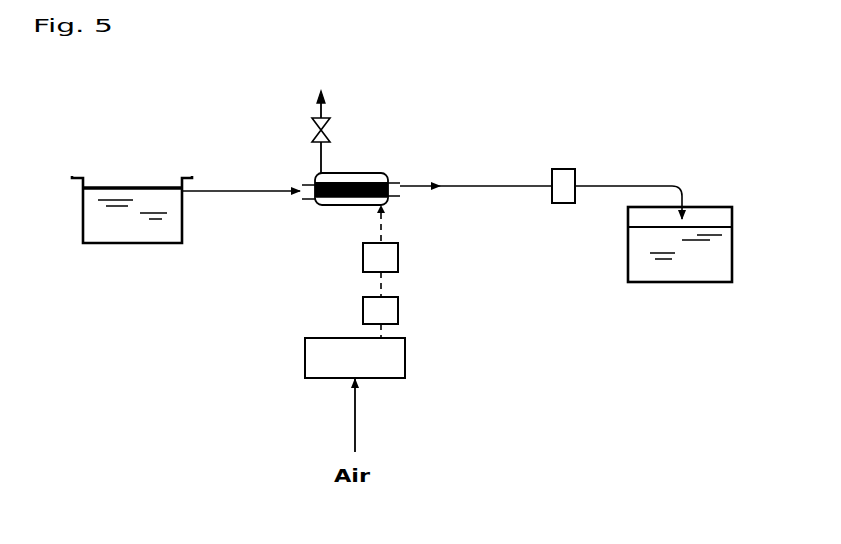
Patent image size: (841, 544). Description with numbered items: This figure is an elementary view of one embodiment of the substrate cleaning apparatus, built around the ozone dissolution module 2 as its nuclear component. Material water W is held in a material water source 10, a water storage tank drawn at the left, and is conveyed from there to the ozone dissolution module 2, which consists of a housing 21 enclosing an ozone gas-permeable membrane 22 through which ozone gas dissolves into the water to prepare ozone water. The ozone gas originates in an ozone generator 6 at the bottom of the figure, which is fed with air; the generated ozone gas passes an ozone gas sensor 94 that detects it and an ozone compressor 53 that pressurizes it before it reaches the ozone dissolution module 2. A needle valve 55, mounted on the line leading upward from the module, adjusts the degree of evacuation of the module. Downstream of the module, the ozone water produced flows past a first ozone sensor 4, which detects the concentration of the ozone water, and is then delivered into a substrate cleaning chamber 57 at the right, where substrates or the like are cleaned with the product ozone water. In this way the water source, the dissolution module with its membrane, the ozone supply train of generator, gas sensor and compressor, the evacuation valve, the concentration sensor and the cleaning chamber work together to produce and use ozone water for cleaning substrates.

The material water source 10 is at (83, 230).
The material water W is at (113, 195).
The ozone dissolution module 2 is at (360, 190).
The housing 21 is at (388, 200).
The ozone gas-permeable membrane 22 is at (372, 182).
The needle valve 55 is at (323, 122).
The first ozone sensor 4 is at (567, 170).
The substrate cleaning chamber 57 is at (698, 275).
The ozone compressor 53 is at (392, 257).
The ozone gas sensor 94 is at (397, 313).
The ozone generator 6 is at (307, 368).